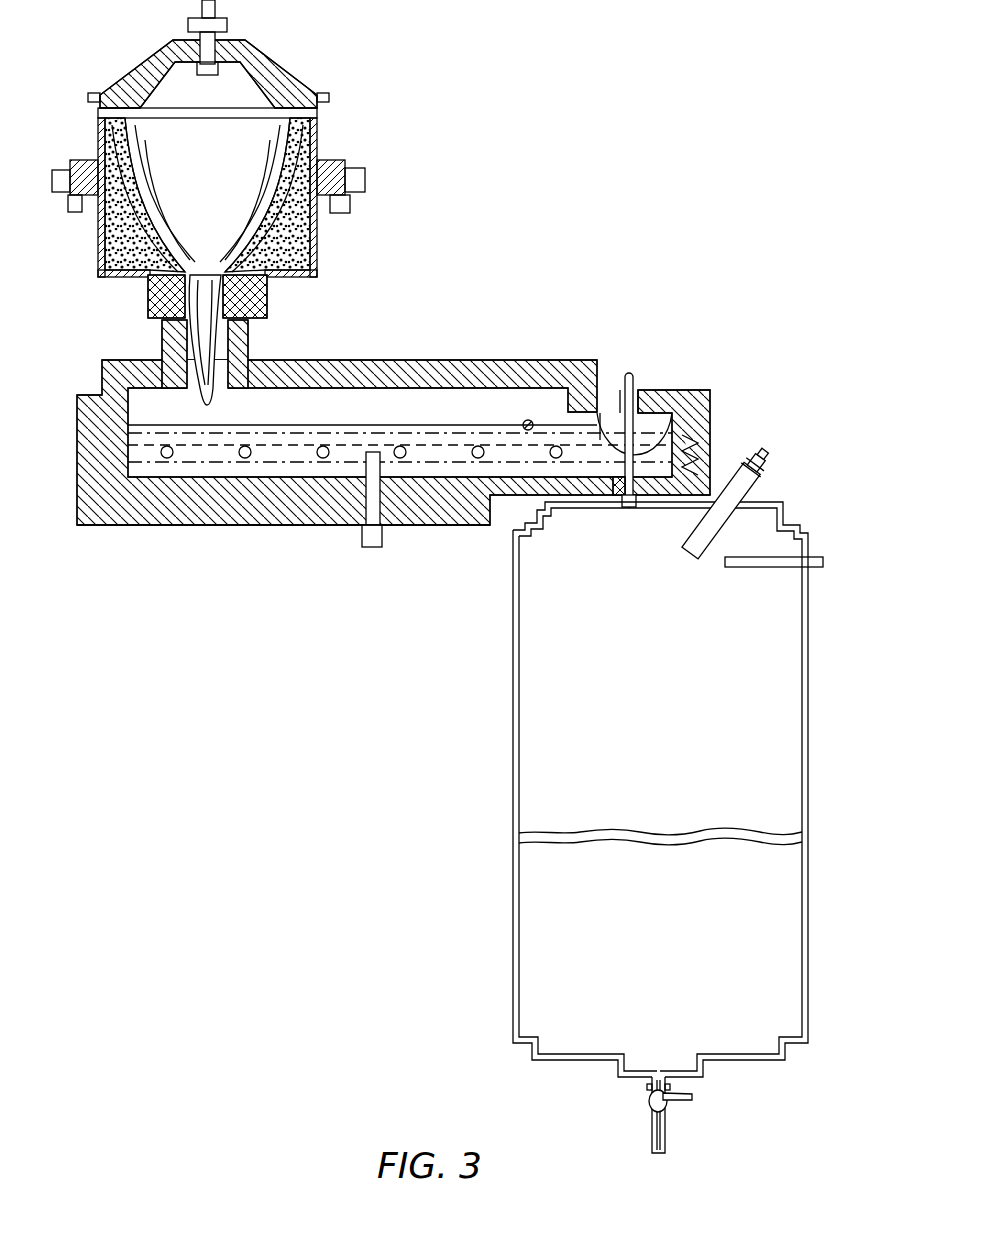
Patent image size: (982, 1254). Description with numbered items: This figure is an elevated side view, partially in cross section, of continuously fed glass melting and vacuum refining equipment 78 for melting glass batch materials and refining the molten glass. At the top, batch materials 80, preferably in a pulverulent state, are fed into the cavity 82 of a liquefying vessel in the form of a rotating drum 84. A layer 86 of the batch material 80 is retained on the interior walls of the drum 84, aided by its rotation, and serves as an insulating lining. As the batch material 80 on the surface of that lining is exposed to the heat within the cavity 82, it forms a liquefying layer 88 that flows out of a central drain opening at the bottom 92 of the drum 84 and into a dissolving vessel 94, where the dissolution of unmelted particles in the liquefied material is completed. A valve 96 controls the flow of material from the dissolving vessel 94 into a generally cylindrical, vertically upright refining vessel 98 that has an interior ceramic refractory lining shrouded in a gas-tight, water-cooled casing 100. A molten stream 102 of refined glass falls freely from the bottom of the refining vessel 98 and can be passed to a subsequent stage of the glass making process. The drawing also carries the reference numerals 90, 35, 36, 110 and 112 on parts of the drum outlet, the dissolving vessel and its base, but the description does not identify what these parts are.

The glass melting and vacuum refining equipment 78 is at (434, 576).
The rotating drum 84 is at (240, 159).
The batch materials 80 is at (98, 143).
The cavity 82 is at (257, 128).
The layer of batch material 86 is at (318, 230).
The bottom of the vessel 92 is at (267, 307).
The guide tube 90 is at (185, 348).
The liquefying layer 88 is at (248, 367).
The dissolving vessel 94 is at (418, 439).
The gate plate 35 is at (600, 425).
The valve 96 is at (633, 382).
The spring 36 is at (676, 430).
The fastener 110 is at (362, 532).
The chamber base 112 is at (143, 527).
The vertically upright vessel 98 is at (598, 798).
The water-cooled casing 100 is at (513, 678).
The molten stream 102 is at (668, 1135).